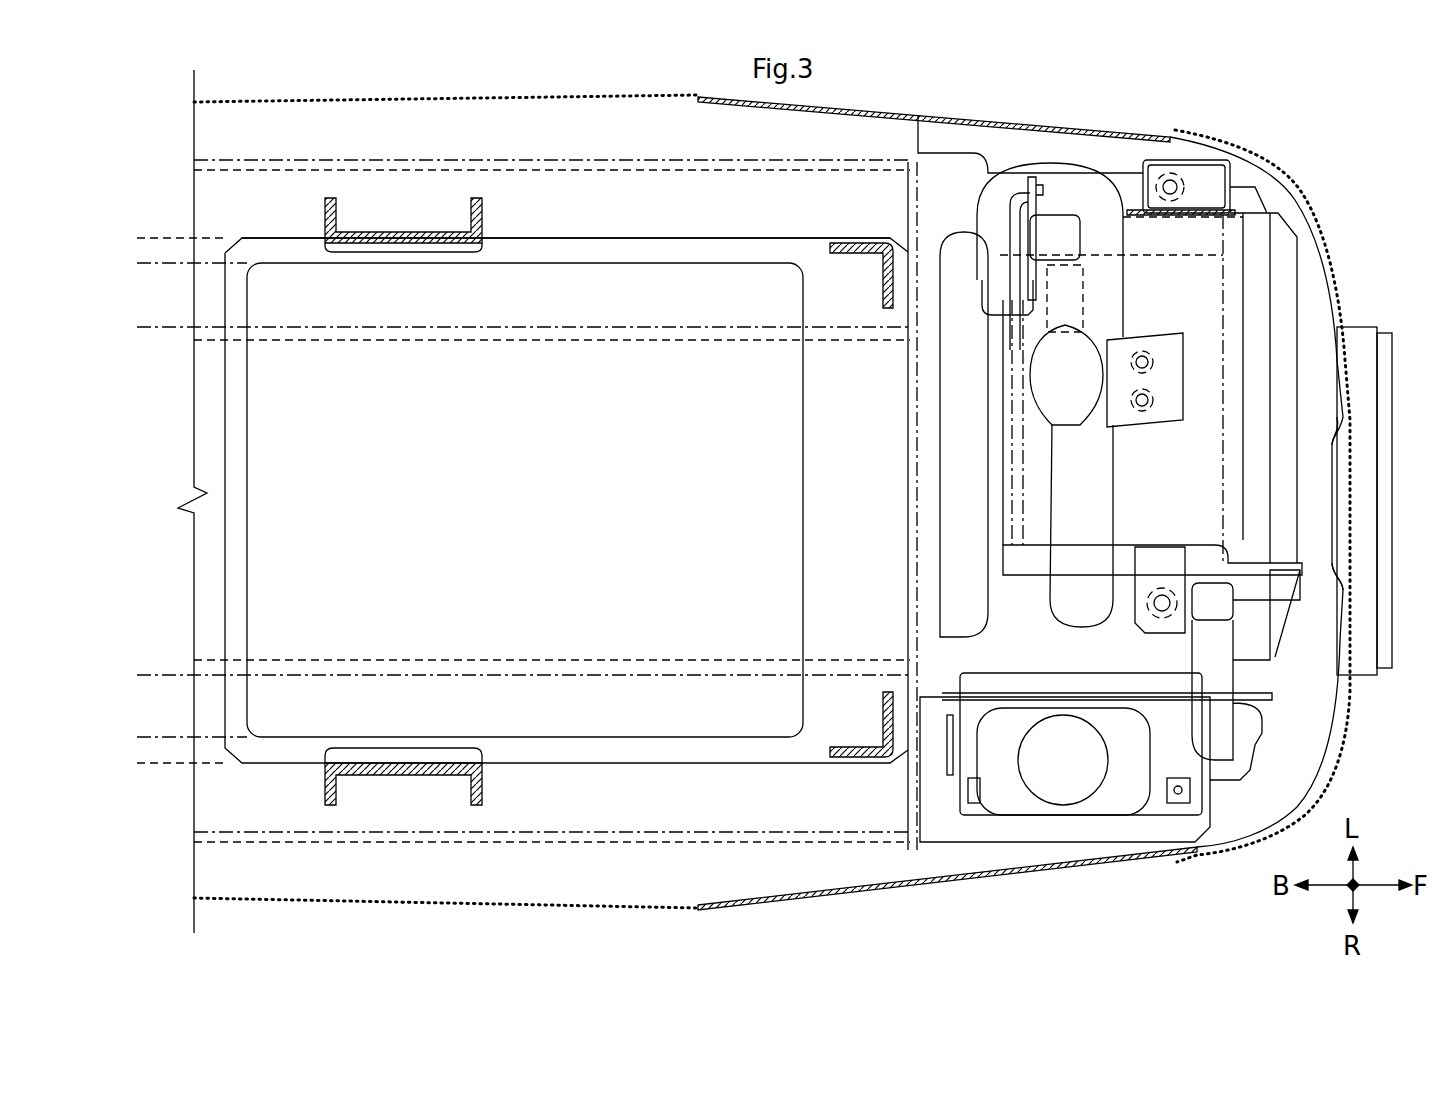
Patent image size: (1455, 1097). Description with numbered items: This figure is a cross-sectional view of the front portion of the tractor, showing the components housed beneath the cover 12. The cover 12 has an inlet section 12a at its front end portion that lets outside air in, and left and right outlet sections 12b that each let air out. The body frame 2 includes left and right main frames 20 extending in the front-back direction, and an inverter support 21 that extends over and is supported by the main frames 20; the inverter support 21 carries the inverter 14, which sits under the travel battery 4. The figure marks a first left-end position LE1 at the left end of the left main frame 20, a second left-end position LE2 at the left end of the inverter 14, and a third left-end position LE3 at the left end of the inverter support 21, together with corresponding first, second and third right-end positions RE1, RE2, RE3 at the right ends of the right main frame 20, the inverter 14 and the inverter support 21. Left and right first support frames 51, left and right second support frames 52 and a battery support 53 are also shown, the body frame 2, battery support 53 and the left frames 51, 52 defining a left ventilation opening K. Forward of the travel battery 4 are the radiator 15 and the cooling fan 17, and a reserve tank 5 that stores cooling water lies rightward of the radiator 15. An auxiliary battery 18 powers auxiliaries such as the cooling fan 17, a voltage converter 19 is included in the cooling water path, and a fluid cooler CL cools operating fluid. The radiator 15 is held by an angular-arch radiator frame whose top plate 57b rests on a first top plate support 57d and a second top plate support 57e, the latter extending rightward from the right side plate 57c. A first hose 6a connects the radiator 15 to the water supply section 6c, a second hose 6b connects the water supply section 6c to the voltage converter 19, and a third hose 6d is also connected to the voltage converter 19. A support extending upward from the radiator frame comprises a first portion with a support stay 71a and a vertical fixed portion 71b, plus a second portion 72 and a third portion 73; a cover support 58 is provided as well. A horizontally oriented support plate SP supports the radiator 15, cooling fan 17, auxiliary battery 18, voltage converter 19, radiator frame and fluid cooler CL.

The body frame 2 is at (1393, 390).
The travel battery 4 is at (595, 160).
The reserve tank 5 is at (1133, 793).
The first hose 6a is at (1060, 175).
The second hose 6b is at (1097, 510).
The water supply section 6c is at (1092, 410).
The third hose 6d is at (1225, 678).
The cover 12 is at (945, 105).
The inlet section 12a is at (1312, 208).
The outlet section 12b is at (370, 95).
The inverter 14 is at (265, 438).
The radiator 15 is at (1240, 270).
The cooling fan 17 is at (1002, 440).
The auxiliary battery 18 is at (953, 793).
The voltage converter 19 is at (1257, 618).
The main frame 20 is at (530, 345).
The inverter support 21 is at (530, 245).
The first support frame 51 is at (845, 258).
The second support frame 52 is at (415, 243).
The battery support 53 is at (658, 160).
The top plate 57b is at (1223, 408).
The right side plate 57c is at (1252, 560).
The first top plate support 57d is at (1205, 170).
The second top plate support 57e is at (1148, 625).
The cover support 58 is at (1010, 395).
The support stay 71a is at (1010, 280).
The vertical fixed portion 71b is at (1043, 240).
The second portion 72 is at (1082, 265).
The third portion 73 is at (1252, 213).
The left ventilation opening K is at (712, 253).
The fluid cooler CL is at (955, 430).
The support plate SP is at (1298, 723).
The first left-end position LE1 is at (496, 328).
The second left-end position LE2 is at (164, 264).
The third left-end position LE3 is at (153, 239).
The first right-end position RE1 is at (496, 675).
The second right-end position RE2 is at (164, 738).
The third right-end position RE3 is at (153, 764).